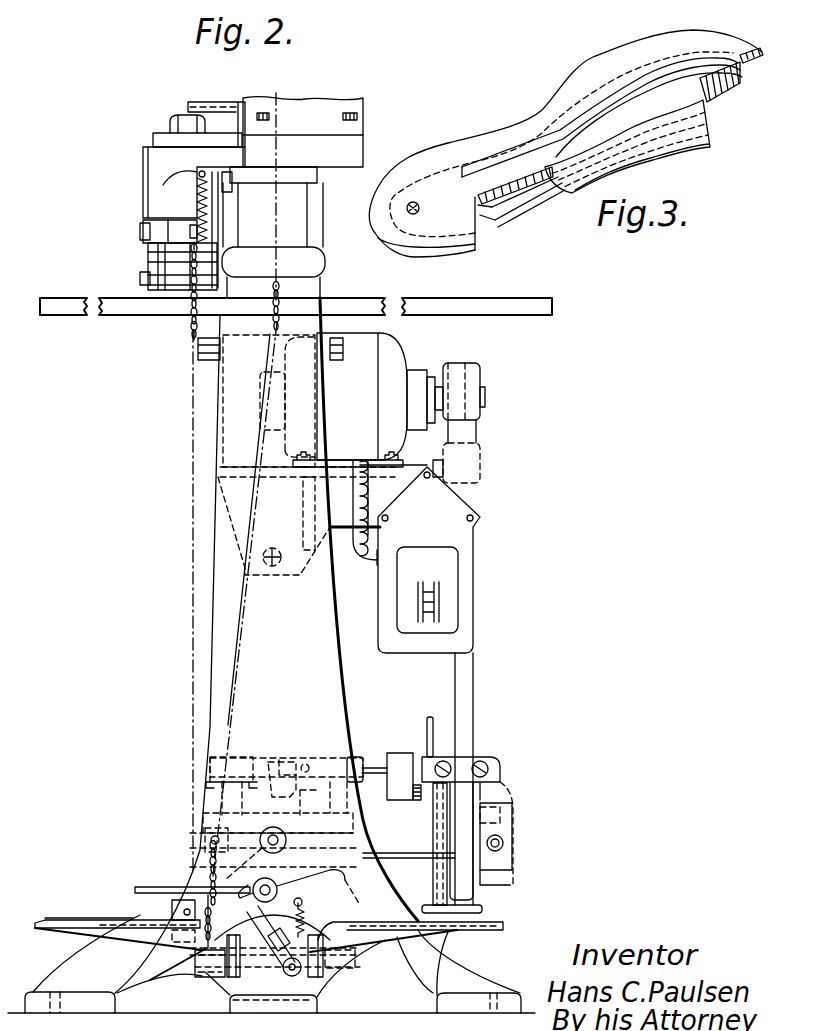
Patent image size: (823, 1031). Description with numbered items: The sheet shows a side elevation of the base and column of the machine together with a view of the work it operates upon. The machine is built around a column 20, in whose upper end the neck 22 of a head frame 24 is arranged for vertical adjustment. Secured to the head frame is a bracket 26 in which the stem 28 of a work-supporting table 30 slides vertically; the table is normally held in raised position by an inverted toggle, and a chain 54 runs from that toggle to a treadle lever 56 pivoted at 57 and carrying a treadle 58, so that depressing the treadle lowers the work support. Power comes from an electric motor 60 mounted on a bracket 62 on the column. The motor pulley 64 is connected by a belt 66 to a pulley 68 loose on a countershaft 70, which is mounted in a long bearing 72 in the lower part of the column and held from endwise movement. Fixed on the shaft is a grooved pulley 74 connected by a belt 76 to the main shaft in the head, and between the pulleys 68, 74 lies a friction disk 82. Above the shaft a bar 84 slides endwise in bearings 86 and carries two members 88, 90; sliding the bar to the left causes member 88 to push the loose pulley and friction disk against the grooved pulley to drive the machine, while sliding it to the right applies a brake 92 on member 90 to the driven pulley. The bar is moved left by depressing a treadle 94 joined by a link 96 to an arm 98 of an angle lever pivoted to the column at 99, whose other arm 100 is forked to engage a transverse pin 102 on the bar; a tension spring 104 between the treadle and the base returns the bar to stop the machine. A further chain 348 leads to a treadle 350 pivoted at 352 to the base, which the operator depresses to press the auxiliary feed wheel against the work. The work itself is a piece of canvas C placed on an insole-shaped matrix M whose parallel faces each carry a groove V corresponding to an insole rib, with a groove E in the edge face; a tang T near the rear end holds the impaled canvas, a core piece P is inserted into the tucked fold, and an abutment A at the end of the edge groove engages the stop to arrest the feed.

In FIG. 2, the column 20 is at (328, 684).
In FIG. 2, the neck 22 is at (295, 236).
In FIG. 2, the head frame 24 is at (352, 132).
In FIG. 2, the bracket 26 is at (333, 157).
In FIG. 2, the stem 28 is at (170, 139).
In FIG. 2, the work-supporting table 30 is at (166, 130).
In FIG. 2, the chain 54 is at (187, 318).
In FIG. 2, the treadle lever 56 is at (210, 960).
In FIG. 2, the pivot 57 is at (337, 973).
In FIG. 2, the treadle 58 is at (85, 918).
In FIG. 2, the electric motor 60 is at (395, 360).
In FIG. 2, the bracket 62 is at (342, 513).
In FIG. 2, the pulley 64 is at (483, 378).
In FIG. 2, the belt 66 is at (463, 433).
In FIG. 2, the pulley 68 is at (495, 906).
In FIG. 2, the countershaft 70 is at (515, 852).
In FIG. 2, the long bearing 72 is at (366, 896).
In FIG. 2, the grooved pulley 74 is at (424, 900).
In FIG. 2, the belt 76 is at (427, 736).
In FIG. 2, the friction disk 82 is at (505, 921).
In FIG. 2, the bar 84 is at (372, 766).
In FIG. 2, the bearings 86 is at (240, 757).
In FIG. 2, the member 88 is at (495, 797).
In FIG. 2, the member 90 is at (397, 784).
In FIG. 2, the brake 92 is at (418, 802).
In FIG. 2, the treadle 94 is at (403, 938).
In FIG. 2, the link 96 is at (275, 941).
In FIG. 2, the arm 98 is at (248, 860).
In FIG. 2, the pivot 99 is at (280, 840).
In FIG. 2, the arm 100 is at (315, 799).
In FIG. 2, the transverse pin 102 is at (283, 760).
In FIG. 2, the tension spring 104 is at (305, 921).
In FIG. 2, the chain 348 is at (240, 647).
In FIG. 2, the treadle 350 is at (142, 887).
In FIG. 2, the pivot 352 is at (270, 887).
In FIG. 3, the canvas C is at (587, 83).
In FIG. 3, the core piece P is at (490, 157).
In FIG. 3, the groove E is at (748, 71).
In FIG. 3, the matrix M is at (478, 241).
In FIG. 3, the groove V is at (508, 198).
In FIG. 3, the tang T is at (423, 212).
In FIG. 3, the abutment A is at (492, 228).